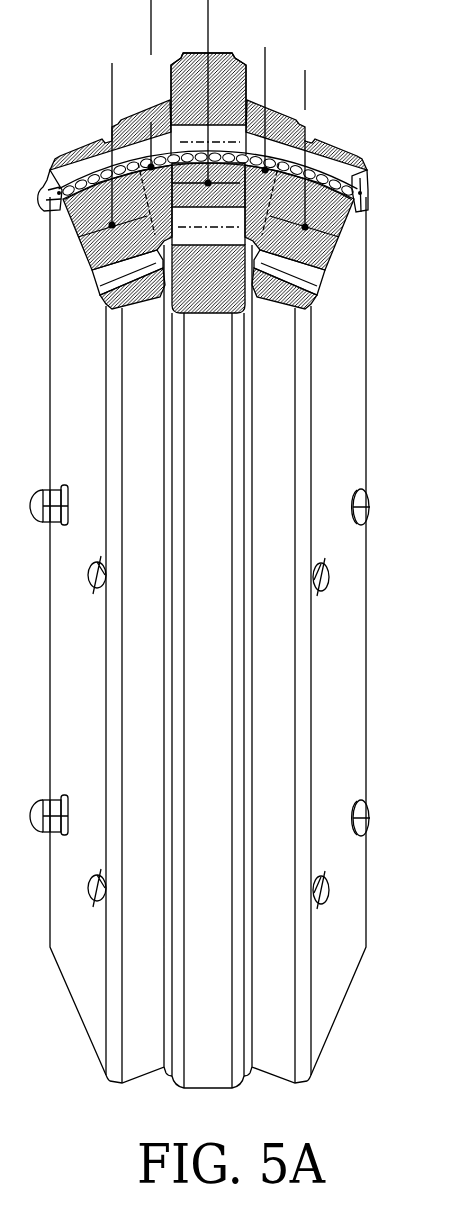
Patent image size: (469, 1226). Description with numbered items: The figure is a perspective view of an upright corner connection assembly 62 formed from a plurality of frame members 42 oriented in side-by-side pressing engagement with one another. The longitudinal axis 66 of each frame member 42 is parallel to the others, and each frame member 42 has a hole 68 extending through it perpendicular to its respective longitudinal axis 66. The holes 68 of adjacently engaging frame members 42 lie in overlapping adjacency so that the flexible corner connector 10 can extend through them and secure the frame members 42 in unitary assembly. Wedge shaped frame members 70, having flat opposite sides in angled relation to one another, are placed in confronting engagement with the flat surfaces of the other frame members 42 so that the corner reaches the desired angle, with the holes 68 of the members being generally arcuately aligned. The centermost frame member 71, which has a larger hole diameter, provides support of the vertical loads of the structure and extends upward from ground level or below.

The flexible corner connector 10 is at (377, 492).
The frame member 42 is at (77, 150).
The corner connection assembly 62 is at (369, 1050).
The longitudinal axis 66 is at (148, 17).
The hole 68 is at (332, 584).
The wedge shaped frame member 70 is at (111, 127).
The centermost frame member 71 is at (208, 656).